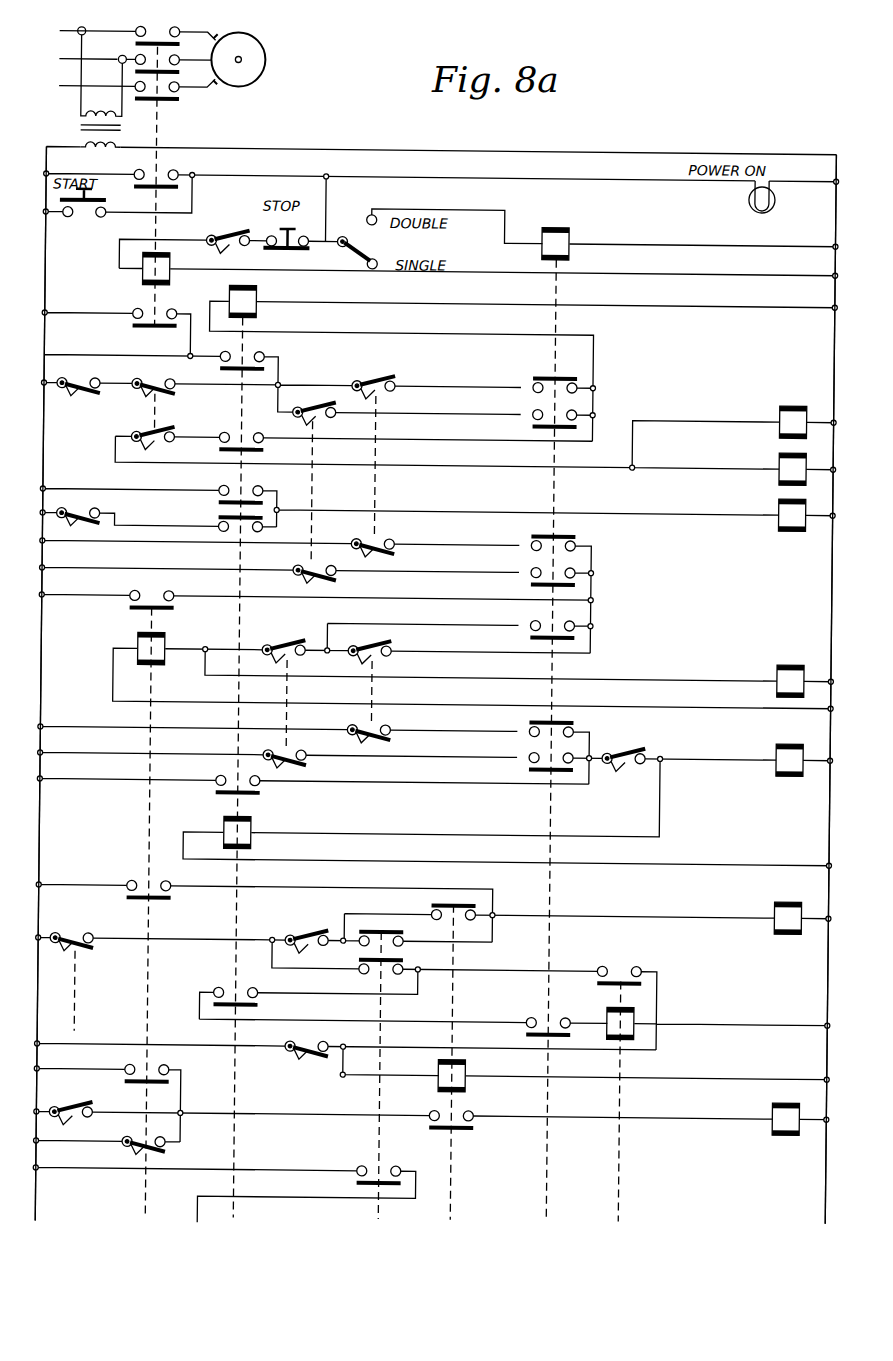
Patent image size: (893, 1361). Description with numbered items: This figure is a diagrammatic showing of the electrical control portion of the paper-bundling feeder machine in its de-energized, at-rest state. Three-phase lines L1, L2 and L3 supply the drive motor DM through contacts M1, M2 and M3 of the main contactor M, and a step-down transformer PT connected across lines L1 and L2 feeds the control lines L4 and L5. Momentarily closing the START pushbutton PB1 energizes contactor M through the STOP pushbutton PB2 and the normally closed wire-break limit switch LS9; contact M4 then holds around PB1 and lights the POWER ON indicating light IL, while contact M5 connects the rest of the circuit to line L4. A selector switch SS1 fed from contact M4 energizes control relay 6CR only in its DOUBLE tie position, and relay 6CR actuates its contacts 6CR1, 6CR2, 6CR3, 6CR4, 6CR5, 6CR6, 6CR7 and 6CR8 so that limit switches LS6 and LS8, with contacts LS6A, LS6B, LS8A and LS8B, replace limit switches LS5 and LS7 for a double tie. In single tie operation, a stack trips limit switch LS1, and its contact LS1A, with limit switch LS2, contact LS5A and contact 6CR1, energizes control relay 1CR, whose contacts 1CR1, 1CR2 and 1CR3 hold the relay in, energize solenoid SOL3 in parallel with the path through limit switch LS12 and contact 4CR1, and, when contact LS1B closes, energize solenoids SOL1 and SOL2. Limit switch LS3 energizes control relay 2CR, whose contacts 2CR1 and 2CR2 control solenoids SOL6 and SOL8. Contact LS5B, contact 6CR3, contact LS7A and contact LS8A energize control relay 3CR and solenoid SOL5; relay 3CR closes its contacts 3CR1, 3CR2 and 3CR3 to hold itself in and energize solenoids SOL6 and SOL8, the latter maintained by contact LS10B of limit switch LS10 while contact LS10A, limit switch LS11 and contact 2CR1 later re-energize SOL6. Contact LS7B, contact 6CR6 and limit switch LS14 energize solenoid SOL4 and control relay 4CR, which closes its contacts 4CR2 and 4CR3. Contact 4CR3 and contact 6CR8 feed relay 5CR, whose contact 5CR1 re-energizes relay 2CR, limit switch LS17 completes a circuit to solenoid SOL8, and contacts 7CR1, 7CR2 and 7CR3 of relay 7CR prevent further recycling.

The line L1 is at (121, 33).
The line L2 is at (118, 61).
The line L3 is at (120, 88).
The line L4 is at (58, 828).
The line L5 is at (838, 985).
The contact M1 is at (175, 31).
The contact M2 is at (175, 59).
The contact M3 is at (175, 86).
The drive motor DM is at (266, 57).
The step-down transformer PT is at (80, 128).
The contact M4 is at (175, 174).
The contact M5 is at (136, 322).
The main contactor M is at (145, 276).
The pushbutton START switch PB1 is at (85, 217).
The pushbutton STOP switch PB2 is at (306, 247).
The limit switch LS9 is at (218, 232).
The selector switch SS1 is at (347, 233).
The POWER ON indicating light IL is at (750, 194).
The control relay 6CR is at (574, 240).
The control relay 1CR is at (262, 300).
The contact 1CR1 is at (256, 362).
The contact 1CR2 is at (243, 430).
The contact 1CR3 is at (243, 484).
The contact LS1A is at (160, 373).
The contact LS1B is at (158, 442).
The limit switch LS1 is at (166, 407).
The limit switch LS2 is at (76, 392).
The contact LS5A is at (372, 377).
The contact LS5B is at (386, 549).
The limit switch LS5 is at (383, 486).
The contact LS6A is at (322, 405).
The contact LS6B is at (326, 577).
The limit switch LS6 is at (320, 486).
The contact 6CR1 is at (536, 394).
The contact 6CR2 is at (536, 418).
The contact 6CR3 is at (537, 549).
The contact 6CR4 is at (536, 576).
The contact 6CR5 is at (535, 627).
The contact 6CR6 is at (537, 734).
The contact 6CR7 is at (536, 760).
The contact 6CR8 is at (536, 1021).
The solenoid SOL1 is at (782, 408).
The solenoid SOL2 is at (782, 455).
The solenoid SOL3 is at (782, 501).
The solenoid SOL4 is at (783, 747).
The solenoid SOL5 is at (783, 667).
The solenoid SOL6 is at (783, 905).
The solenoid SOL8 is at (783, 1106).
The limit switch LS12 is at (80, 512).
The contact 4CR1 is at (224, 526).
The contact 4CR2 is at (224, 779).
The contact 4CR3 is at (224, 987).
The control relay 4CR is at (261, 824).
The contact 3CR1 is at (138, 592).
The contact 3CR2 is at (134, 880).
The contact 3CR3 is at (134, 1068).
The control relay 3CR is at (142, 641).
The contact LS8A is at (292, 641).
The contact LS8B is at (302, 762).
The limit switch LS8 is at (298, 692).
The contact LS7A is at (394, 651).
The contact LS7B is at (386, 736).
The limit switch LS7 is at (383, 692).
The limit switch LS14 is at (627, 750).
The contact LS10A is at (80, 918).
The contact LS10B is at (95, 1103).
The limit switch LS10 is at (80, 1022).
The limit switch LS11 is at (303, 932).
The limit switch LS3 is at (300, 1054).
The limit switch LS17 is at (170, 1150).
The contact 2CR1 is at (440, 908).
The contact 2CR2 is at (468, 1115).
The control relay 2CR is at (477, 1067).
The contact 7CR1 is at (392, 934).
The contact 7CR2 is at (372, 975).
The contact 7CR3 is at (392, 1165).
The contact 5CR1 is at (625, 966).
The relay 5CR is at (618, 1012).